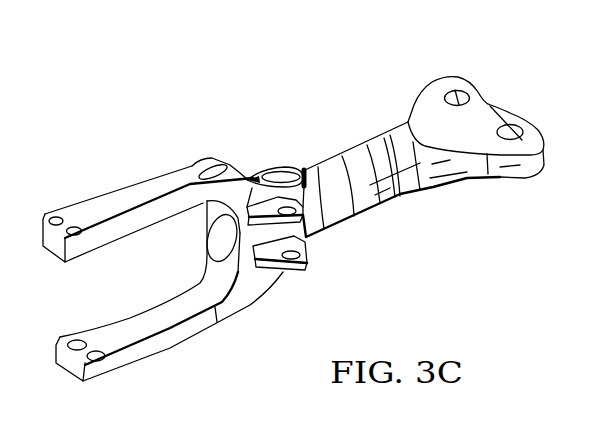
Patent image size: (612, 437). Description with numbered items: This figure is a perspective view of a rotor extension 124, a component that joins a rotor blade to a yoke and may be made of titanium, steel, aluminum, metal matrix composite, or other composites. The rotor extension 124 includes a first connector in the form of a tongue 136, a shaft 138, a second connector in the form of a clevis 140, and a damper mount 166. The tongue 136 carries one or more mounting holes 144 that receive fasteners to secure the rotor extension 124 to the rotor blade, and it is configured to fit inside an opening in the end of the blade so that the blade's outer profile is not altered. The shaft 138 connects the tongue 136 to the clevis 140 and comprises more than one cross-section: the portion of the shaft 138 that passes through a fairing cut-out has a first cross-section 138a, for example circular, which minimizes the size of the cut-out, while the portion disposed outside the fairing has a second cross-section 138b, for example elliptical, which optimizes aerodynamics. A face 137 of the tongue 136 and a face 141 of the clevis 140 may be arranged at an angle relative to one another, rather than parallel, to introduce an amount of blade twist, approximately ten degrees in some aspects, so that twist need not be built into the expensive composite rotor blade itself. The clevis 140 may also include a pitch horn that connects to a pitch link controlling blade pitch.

The rotor extension 124 is at (125, 97).
The tongue 136 is at (433, 83).
The face of tongue 137 is at (490, 108).
The shaft 138 is at (345, 156).
The first cross-section 138a is at (363, 220).
The second cross-section 138b is at (390, 124).
The clevis 140 is at (137, 363).
The face of clevis 141 is at (100, 207).
The mounting holes 144 is at (460, 86).
The damper mount 166 is at (287, 273).